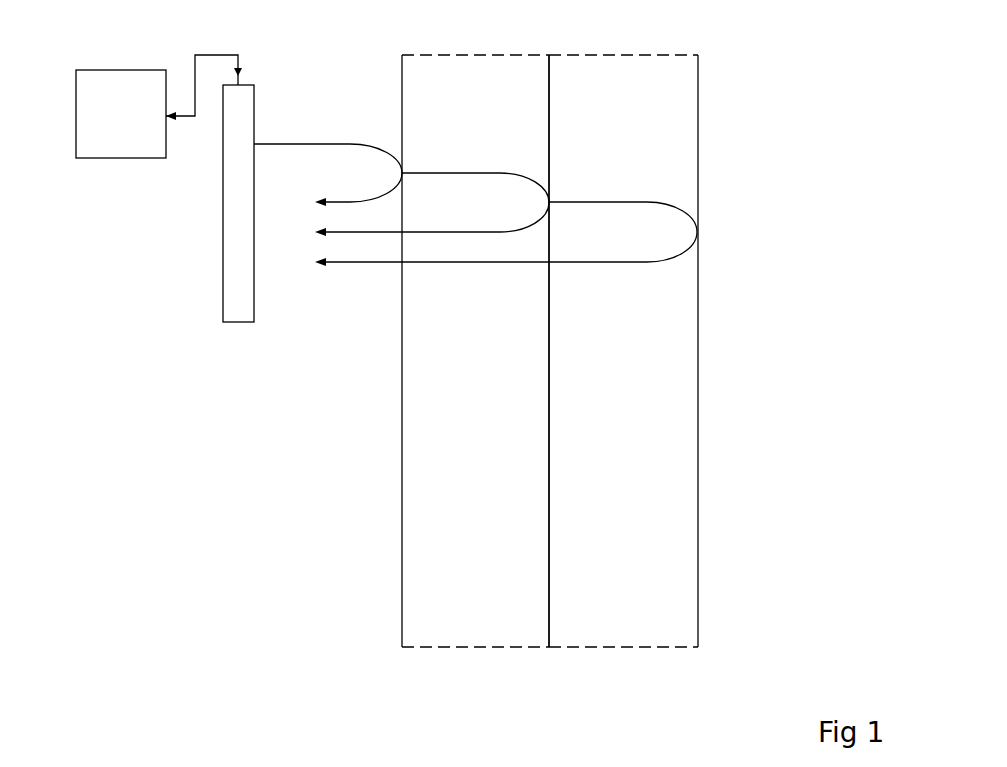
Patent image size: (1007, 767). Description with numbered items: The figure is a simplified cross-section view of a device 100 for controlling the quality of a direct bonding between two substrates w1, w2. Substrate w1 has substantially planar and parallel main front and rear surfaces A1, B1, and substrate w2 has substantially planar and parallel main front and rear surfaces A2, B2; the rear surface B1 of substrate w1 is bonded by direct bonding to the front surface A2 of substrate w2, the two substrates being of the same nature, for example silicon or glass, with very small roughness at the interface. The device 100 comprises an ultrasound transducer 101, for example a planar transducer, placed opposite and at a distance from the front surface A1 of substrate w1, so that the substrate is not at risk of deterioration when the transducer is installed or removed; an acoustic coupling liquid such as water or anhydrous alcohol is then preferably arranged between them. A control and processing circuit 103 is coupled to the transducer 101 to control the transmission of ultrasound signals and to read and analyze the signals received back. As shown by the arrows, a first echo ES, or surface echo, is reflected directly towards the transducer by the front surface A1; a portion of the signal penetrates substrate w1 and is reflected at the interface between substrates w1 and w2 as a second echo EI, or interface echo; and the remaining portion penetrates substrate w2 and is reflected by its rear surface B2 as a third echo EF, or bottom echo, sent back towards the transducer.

The device 100 is at (196, 316).
The ultrasound transducer 101 is at (223, 231).
The control and processing circuit 103 is at (113, 70).
The substrate w1 is at (482, 55).
The substrate w2 is at (631, 55).
The front surface A1 is at (402, 582).
The rear surface B1 is at (549, 582).
The front surface A2 is at (549, 610).
The rear surface B2 is at (698, 588).
The first echo ES is at (328, 179).
The second echo EI is at (414, 209).
The third echo EF is at (488, 239).